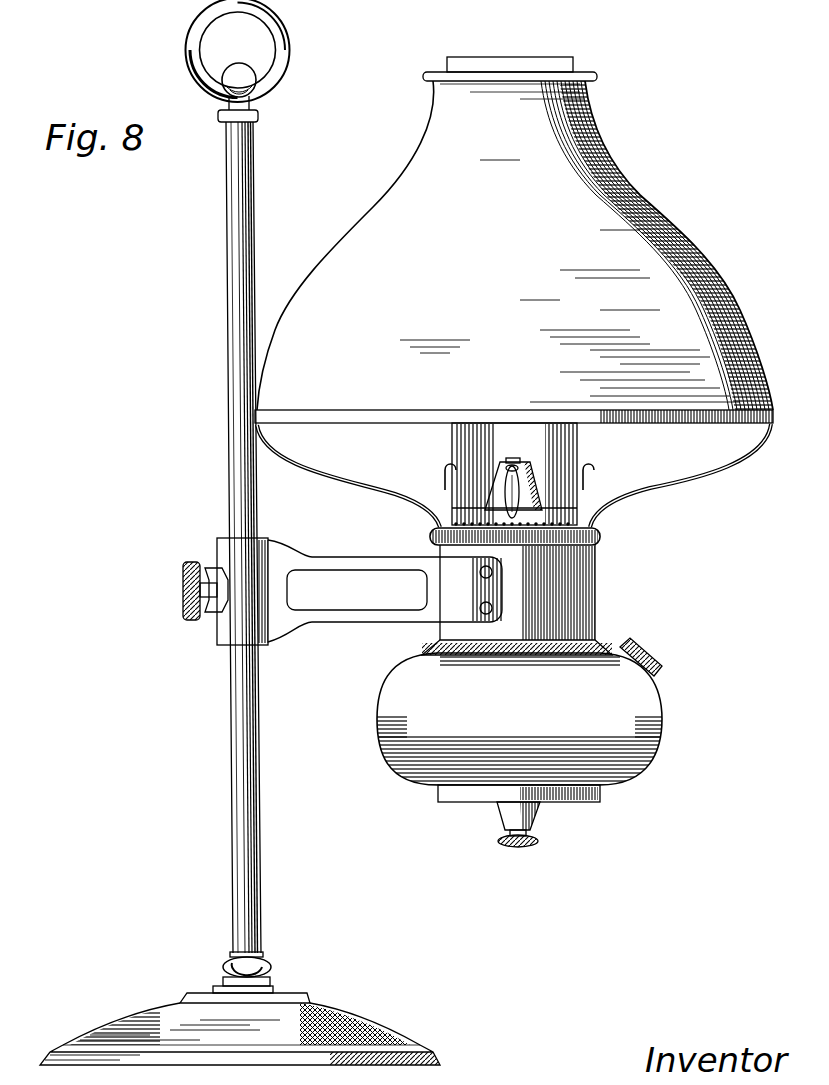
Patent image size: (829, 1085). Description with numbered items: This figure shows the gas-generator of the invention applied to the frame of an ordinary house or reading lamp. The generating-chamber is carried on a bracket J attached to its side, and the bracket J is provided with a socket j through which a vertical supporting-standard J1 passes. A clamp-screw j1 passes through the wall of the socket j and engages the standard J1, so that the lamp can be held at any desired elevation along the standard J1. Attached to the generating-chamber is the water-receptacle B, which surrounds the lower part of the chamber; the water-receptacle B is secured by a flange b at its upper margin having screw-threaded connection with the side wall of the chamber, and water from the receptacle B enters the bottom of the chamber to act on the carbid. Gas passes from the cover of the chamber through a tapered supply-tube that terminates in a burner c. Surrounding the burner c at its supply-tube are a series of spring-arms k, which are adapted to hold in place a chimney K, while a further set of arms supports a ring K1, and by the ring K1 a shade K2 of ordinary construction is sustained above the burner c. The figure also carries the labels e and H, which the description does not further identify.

The lamp shade K2 is at (515, 233).
The ring K1 is at (600, 430).
The chimney K is at (514, 474).
The spring-arms k is at (663, 482).
The flange b is at (444, 482).
The burner c is at (538, 480).
The wick tube e is at (520, 460).
The burner collar H is at (600, 595).
The water-receptacle B is at (522, 742).
The bracket J is at (385, 591).
The supporting-standard J1 is at (238, 708).
The socket j is at (242, 591).
The clamp-screw j1 is at (189, 593).